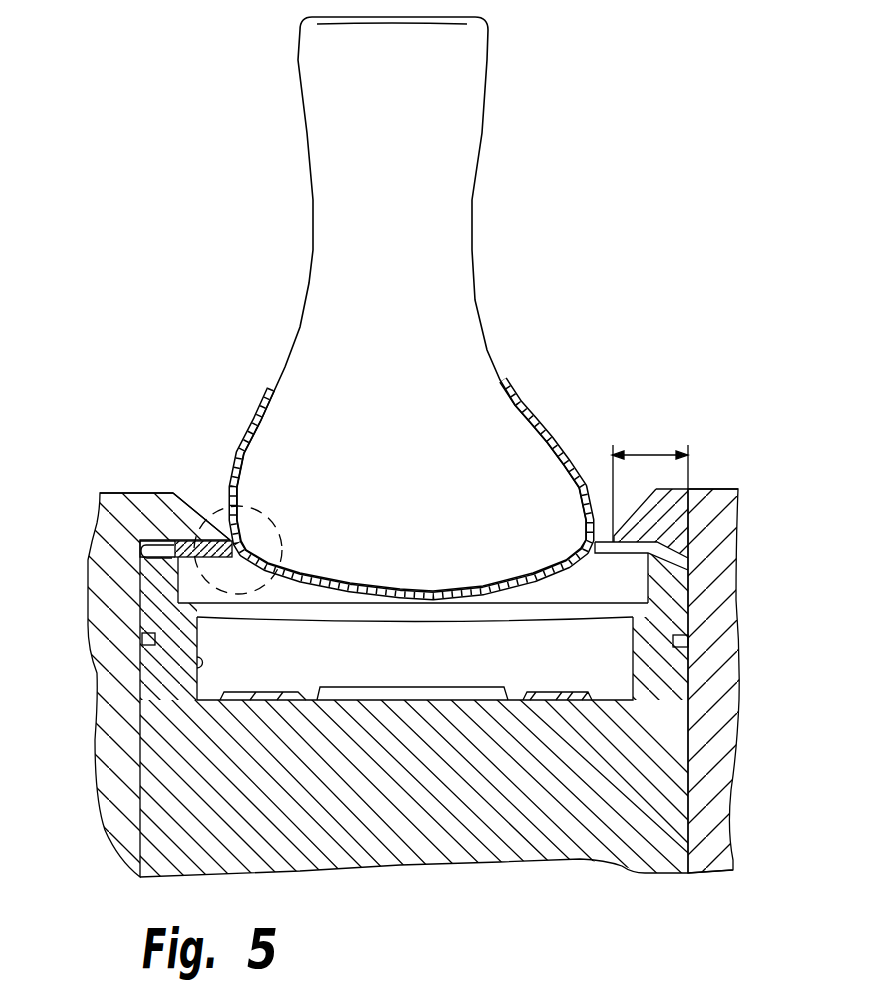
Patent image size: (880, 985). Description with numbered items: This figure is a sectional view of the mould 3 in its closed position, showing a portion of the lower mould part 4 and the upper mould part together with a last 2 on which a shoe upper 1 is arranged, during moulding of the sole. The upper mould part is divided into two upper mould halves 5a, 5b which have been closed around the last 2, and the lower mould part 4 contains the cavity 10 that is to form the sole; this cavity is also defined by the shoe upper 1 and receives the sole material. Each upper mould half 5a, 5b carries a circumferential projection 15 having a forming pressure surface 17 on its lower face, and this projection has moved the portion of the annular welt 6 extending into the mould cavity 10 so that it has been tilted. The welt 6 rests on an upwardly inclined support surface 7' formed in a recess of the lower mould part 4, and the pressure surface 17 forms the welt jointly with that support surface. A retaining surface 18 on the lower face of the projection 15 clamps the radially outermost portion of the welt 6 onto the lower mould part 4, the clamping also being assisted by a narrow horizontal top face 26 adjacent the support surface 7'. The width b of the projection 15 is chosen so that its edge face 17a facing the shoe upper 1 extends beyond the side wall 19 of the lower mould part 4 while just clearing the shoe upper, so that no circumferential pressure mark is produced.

The shoe upper 1 is at (520, 403).
The last 2 is at (473, 90).
The mould 3 is at (763, 477).
The lower mould part 4 is at (638, 823).
The upper mould half 5a is at (107, 743).
The upper mould half 5b is at (717, 700).
The welt 6 is at (196, 606).
The support surface 7' is at (90, 549).
The cavity 10 is at (404, 670).
The projection 15 is at (157, 515).
The forming pressure surface 17 is at (203, 540).
The edge face 17a is at (222, 512).
The retaining surface 18 is at (100, 525).
The side wall 19 is at (197, 663).
The top face 26 is at (150, 517).
The width of the projection b is at (650, 440).